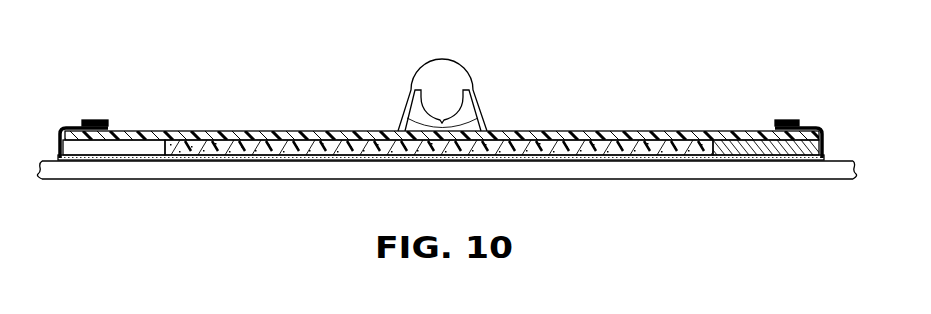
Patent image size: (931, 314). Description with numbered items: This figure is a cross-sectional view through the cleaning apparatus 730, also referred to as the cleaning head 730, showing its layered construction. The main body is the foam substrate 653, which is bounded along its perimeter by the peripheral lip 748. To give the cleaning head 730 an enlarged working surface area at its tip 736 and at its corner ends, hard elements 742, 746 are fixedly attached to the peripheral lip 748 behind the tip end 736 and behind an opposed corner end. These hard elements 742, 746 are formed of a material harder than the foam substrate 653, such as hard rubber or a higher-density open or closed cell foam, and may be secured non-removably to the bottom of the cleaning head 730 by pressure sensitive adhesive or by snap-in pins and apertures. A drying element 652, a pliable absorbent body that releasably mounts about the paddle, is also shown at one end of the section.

The cleaning apparatus 730 is at (588, 108).
The drying element 652 is at (58, 127).
The foam substrate 653 is at (222, 146).
The tip 736 is at (826, 142).
The hard element 742 is at (795, 157).
The hard element 746 is at (88, 148).
The peripheral lip 748 is at (57, 148).